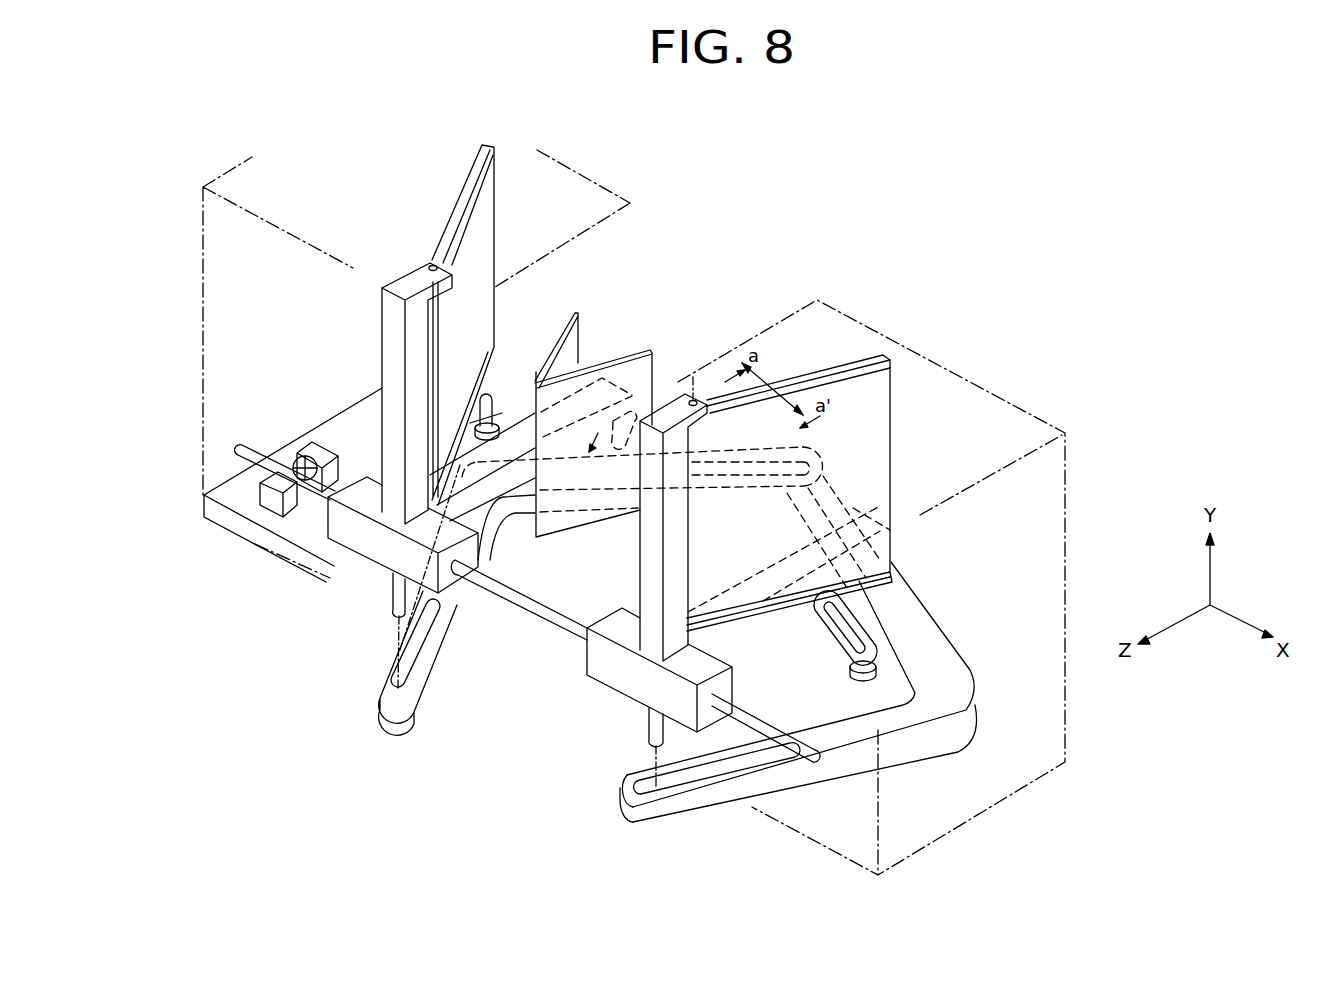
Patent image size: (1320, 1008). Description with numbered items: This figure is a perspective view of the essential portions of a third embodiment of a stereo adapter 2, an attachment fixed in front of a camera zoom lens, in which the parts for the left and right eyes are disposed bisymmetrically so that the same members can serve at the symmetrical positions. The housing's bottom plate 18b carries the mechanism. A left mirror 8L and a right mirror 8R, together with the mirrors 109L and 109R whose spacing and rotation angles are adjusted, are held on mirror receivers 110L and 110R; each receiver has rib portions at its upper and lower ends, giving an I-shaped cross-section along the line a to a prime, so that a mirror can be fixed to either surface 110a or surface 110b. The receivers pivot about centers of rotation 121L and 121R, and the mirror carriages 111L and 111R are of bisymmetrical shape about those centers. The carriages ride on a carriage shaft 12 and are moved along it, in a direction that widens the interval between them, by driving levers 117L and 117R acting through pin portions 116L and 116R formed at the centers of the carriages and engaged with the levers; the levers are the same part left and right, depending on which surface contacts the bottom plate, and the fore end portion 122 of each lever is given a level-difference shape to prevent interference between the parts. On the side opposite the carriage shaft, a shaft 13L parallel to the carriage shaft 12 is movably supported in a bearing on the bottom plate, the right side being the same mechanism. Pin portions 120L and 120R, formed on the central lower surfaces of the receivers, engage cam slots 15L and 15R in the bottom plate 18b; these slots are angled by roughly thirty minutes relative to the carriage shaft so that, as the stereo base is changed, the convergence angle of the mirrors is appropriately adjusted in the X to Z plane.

The stereo adapter 2 is at (1110, 432).
The mirror 8L is at (573, 310).
The mirror 8R is at (652, 365).
The carriage shaft 12 is at (238, 447).
The shaft 13L is at (642, 445).
The cam slot 15L is at (492, 424).
The cam slot 15R is at (853, 670).
The bottom plate 18b is at (337, 420).
The mirror 109L is at (497, 223).
The mirror 109R is at (893, 435).
The mirror receiver 110L is at (490, 143).
The mirror receiver 110R is at (890, 356).
The surface 110a is at (493, 190).
The surface 110b is at (476, 160).
The mirror carriage 111L is at (367, 543).
The mirror carriage 111R is at (608, 678).
The pin portion 116L is at (393, 600).
The pin portion 116R is at (648, 723).
The driving lever 117L is at (382, 687).
The driving lever 117R is at (627, 780).
The pin portion 120L is at (482, 396).
The pin portion 120R is at (830, 627).
The center of rotation 121L is at (428, 263).
The center of rotation 121R is at (693, 378).
The fore end portion 122 is at (650, 497).